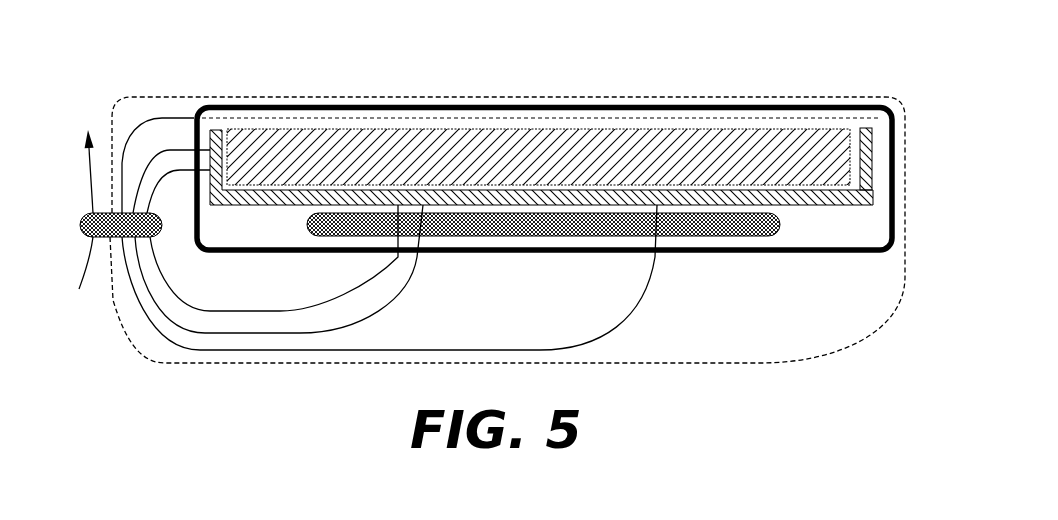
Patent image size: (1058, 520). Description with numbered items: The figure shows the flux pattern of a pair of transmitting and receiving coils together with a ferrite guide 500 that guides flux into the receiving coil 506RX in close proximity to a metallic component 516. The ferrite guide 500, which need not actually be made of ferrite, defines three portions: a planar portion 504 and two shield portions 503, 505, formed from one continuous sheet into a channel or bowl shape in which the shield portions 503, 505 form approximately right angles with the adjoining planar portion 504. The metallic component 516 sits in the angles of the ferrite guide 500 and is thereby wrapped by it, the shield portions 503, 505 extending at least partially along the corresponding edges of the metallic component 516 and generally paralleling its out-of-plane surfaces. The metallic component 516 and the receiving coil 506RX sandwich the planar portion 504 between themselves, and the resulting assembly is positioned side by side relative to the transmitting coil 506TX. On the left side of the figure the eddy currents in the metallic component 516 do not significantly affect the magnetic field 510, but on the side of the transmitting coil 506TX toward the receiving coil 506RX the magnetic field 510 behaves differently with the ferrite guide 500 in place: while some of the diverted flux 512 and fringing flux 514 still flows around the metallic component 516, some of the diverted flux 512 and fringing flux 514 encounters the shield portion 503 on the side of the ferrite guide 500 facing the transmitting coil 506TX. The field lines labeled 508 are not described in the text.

The ferrite guide 500 is at (748, 205).
The shield portion 503 is at (222, 131).
The planar portion 504 is at (527, 186).
The shield portion 505 is at (873, 143).
The transmitting coil 506TX is at (168, 256).
The receiving coil 506RX is at (476, 274).
The electric field lines 508 is at (86, 304).
The magnetic field 510 is at (126, 95).
The diverted flux 512 is at (722, 79).
The fringing flux 514 is at (179, 150).
The metallic component 516 is at (642, 129).